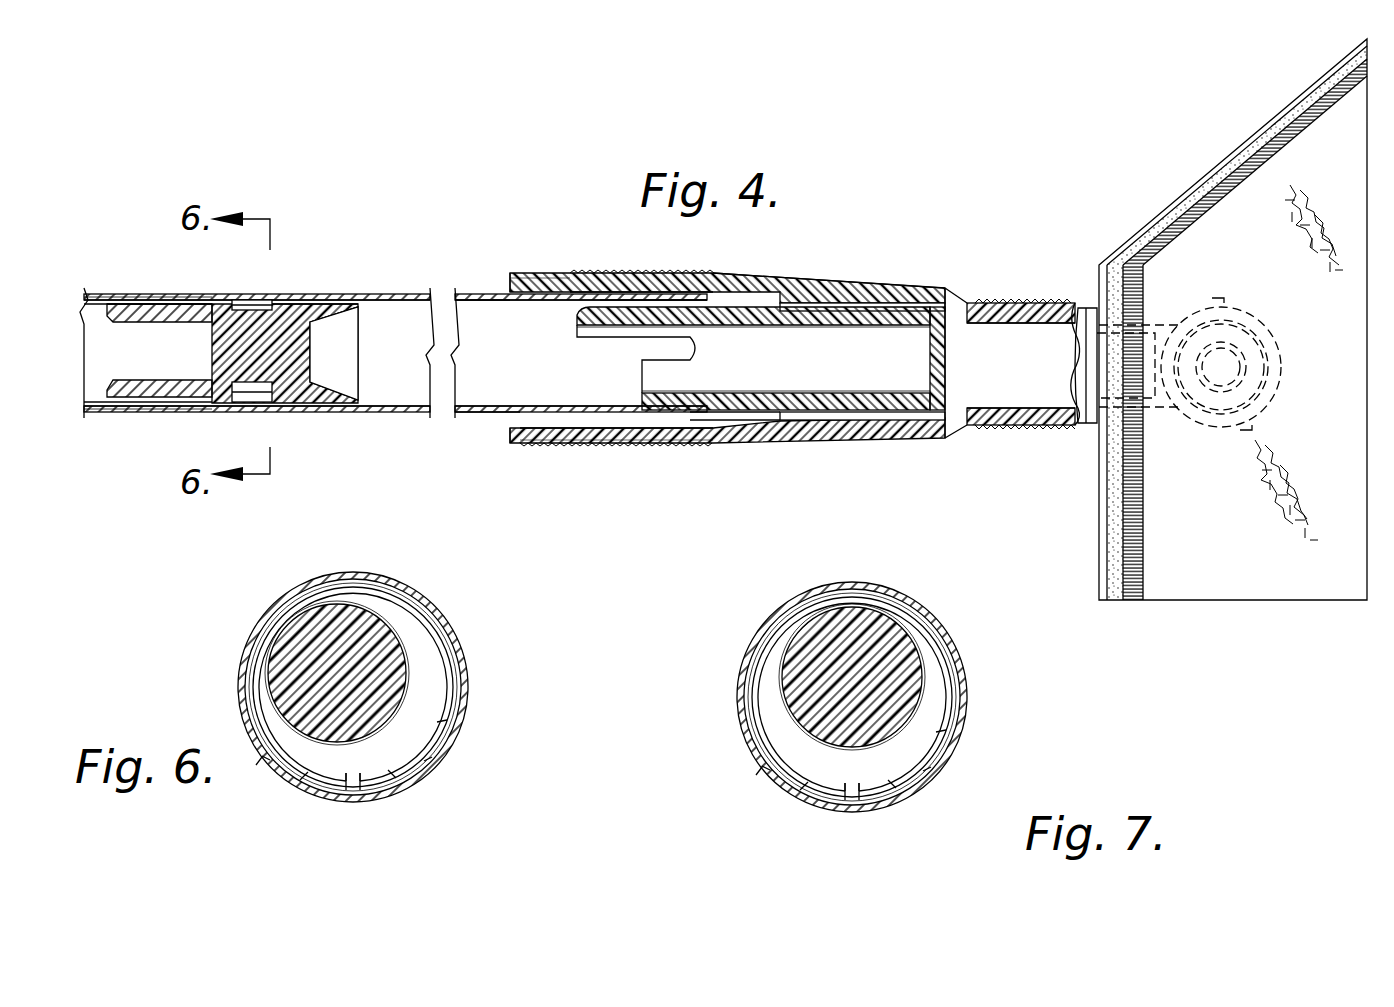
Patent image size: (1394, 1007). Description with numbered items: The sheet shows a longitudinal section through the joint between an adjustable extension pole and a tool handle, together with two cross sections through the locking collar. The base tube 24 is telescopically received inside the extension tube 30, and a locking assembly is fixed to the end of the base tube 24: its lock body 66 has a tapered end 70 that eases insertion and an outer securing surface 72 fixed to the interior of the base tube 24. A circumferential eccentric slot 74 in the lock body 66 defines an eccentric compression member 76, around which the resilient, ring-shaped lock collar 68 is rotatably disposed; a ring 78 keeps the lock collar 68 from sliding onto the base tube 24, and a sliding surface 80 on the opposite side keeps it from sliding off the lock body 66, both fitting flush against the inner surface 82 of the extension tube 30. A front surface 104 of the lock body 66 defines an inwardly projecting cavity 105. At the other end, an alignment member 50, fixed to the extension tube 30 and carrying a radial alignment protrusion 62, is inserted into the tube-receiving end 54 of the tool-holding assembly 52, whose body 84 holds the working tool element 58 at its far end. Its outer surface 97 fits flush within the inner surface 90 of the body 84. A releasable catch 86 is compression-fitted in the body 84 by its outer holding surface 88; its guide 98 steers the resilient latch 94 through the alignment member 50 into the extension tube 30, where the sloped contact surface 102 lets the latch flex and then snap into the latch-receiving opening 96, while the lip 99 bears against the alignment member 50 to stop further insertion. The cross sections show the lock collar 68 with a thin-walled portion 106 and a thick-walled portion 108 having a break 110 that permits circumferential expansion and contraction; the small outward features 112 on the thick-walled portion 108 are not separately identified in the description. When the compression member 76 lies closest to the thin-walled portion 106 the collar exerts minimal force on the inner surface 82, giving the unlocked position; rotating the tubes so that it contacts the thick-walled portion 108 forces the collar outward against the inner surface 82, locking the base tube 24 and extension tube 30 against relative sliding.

In FIG. 4, the base tube 24 is at (104, 410).
In FIG. 4, the extension tube 30 is at (162, 408).
In FIG. 6, the extension tube 30 is at (426, 604).
In FIG. 7, the extension tube 30 is at (930, 614).
In FIG. 4, the alignment member 50 is at (494, 413).
In FIG. 4, the tool-holding assembly 52 is at (812, 270).
In FIG. 4, the tube-receiving end 54 is at (568, 446).
In FIG. 4, the working tool element 58 is at (1308, 52).
In FIG. 4, the alignment protrusion 62 is at (522, 274).
In FIG. 4, the lock body 66 is at (306, 328).
In FIG. 4, the lock collar 68 is at (238, 396).
In FIG. 6, the lock collar 68 is at (468, 670).
In FIG. 7, the lock collar 68 is at (958, 678).
In FIG. 4, the tapered end 70 is at (120, 296).
In FIG. 4, the outer securing surface 72 is at (152, 300).
In FIG. 4, the circumferential eccentric slot 74 is at (264, 400).
In FIG. 6, the circumferential eccentric slot 74 is at (330, 755).
In FIG. 7, the circumferential eccentric slot 74 is at (790, 735).
In FIG. 4, the eccentric compression member 76 is at (262, 304).
In FIG. 6, the eccentric compression member 76 is at (296, 640).
In FIG. 7, the eccentric compression member 76 is at (808, 640).
In FIG. 4, the ring 78 is at (226, 305).
In FIG. 4, the sliding surface 80 is at (336, 298).
In FIG. 4, the inner surface 82 is at (434, 298).
In FIG. 6, the inner surface 82 is at (394, 790).
In FIG. 7, the inner surface 82 is at (896, 800).
In FIG. 4, the body 84 is at (884, 286).
In FIG. 4, the releasable catch 86 is at (732, 307).
In FIG. 4, the outer holding surface 88 is at (774, 438).
In FIG. 4, the inner surface 90 is at (556, 440).
In FIG. 4, the resilient latch 94 is at (626, 306).
In FIG. 4, the latch-receiving opening 96 is at (606, 298).
In FIG. 4, the outer surface 97 is at (516, 440).
In FIG. 4, the guide 98 is at (662, 400).
In FIG. 4, the lip 99 is at (690, 438).
In FIG. 4, the sloped contact surface 102 is at (578, 318).
In FIG. 4, the front surface 104 is at (358, 302).
In FIG. 4, the inwardly projecting cavity 105 is at (345, 372).
In FIG. 6, the thin-walled portion 106 is at (352, 586).
In FIG. 7, the thin-walled portion 106 is at (852, 596).
In FIG. 6, the thick-walled portion 108 is at (330, 778).
In FIG. 7, the thick-walled portion 108 is at (850, 790).
In FIG. 6, the break 110 is at (352, 792).
In FIG. 7, the break 110 is at (826, 780).
In FIG. 6, the steps / notches 112 is at (520, 744).
In FIG. 7, the steps / notches 112 is at (940, 738).